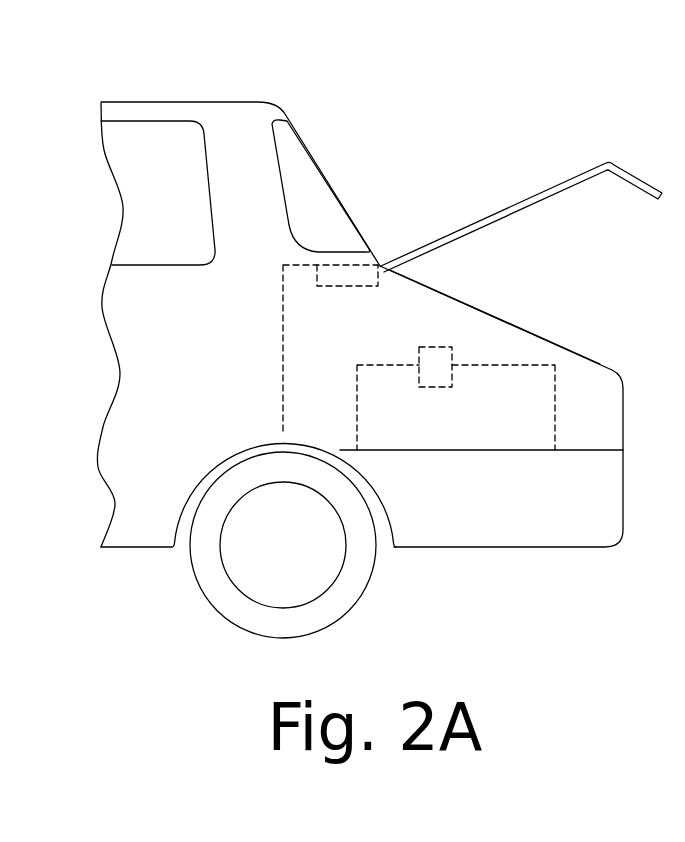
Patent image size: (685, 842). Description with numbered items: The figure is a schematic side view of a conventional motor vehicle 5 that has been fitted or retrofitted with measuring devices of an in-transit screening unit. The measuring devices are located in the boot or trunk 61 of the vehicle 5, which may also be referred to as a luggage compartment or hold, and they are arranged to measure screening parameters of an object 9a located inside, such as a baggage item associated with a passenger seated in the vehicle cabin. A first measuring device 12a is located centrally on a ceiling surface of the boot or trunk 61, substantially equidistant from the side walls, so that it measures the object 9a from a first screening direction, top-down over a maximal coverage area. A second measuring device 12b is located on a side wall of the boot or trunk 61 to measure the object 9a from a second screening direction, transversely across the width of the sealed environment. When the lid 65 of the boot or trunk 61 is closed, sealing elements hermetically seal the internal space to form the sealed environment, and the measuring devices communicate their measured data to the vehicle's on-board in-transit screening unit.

The motor vehicle 5 is at (207, 102).
The lid 65 is at (522, 203).
The boot or trunk 61 is at (574, 291).
The first measuring device 12a is at (347, 288).
The second measuring device 12b is at (433, 347).
The object 9a is at (555, 404).